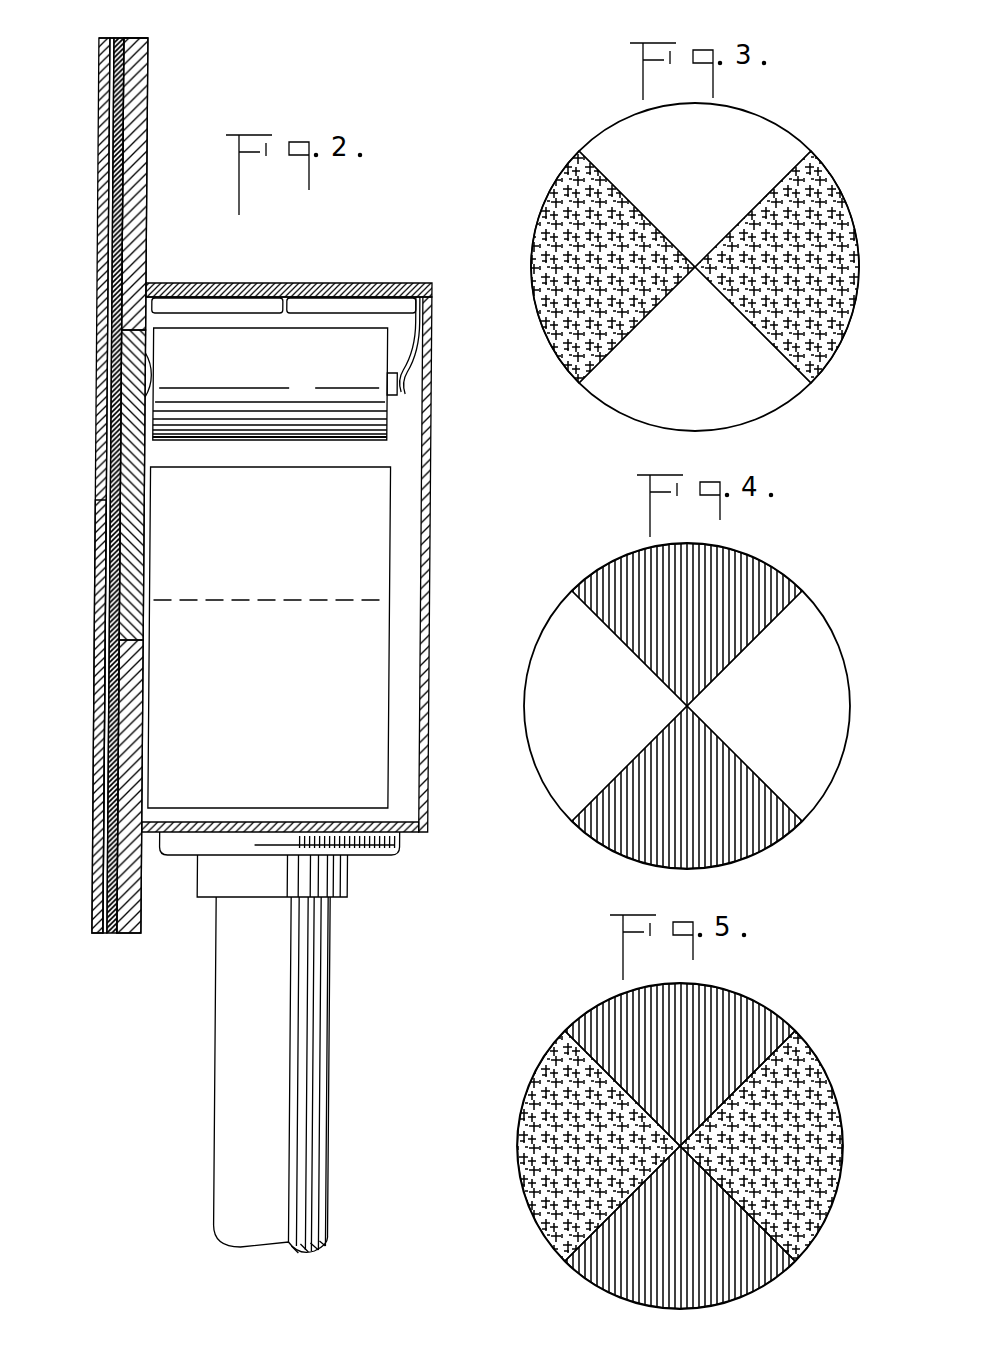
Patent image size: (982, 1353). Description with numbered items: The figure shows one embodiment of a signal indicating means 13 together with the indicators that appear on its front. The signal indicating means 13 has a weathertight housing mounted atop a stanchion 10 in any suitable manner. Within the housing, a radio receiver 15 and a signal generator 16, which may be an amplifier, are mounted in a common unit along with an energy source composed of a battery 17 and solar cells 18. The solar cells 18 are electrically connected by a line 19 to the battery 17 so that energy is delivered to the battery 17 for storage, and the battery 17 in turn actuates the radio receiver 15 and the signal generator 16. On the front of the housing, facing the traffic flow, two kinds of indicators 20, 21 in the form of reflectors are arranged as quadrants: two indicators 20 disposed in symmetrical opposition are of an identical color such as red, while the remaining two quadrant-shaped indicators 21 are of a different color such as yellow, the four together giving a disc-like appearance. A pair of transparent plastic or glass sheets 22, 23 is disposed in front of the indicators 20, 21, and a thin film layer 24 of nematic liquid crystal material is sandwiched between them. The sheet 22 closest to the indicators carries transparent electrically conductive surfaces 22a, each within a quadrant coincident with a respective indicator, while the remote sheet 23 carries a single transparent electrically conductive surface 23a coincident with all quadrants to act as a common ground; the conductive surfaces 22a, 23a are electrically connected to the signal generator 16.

In FIG. 2, the stanchion 10 is at (232, 1043).
In FIG. 2, the signal indicating means 13 is at (384, 270).
In FIG. 3, the signal indicating means 13 is at (851, 176).
In FIG. 4, the signal indicating means 13 is at (521, 633).
In FIG. 5, the signal indicating means 13 is at (502, 1166).
In FIG. 2, the radio receiver 15 is at (376, 667).
In FIG. 2, the signal generator 16 is at (389, 565).
In FIG. 2, the battery 17 is at (375, 447).
In FIG. 2, the solar cells 18 is at (299, 299).
In FIG. 2, the line 19 is at (432, 343).
In FIG. 2, the indicator 20 is at (137, 155).
In FIG. 4, the indicator 20 is at (760, 575).
In FIG. 5, the indicator 20 is at (760, 1016).
In FIG. 2, the indicator 21 is at (140, 350).
In FIG. 3, the indicator 21 is at (566, 371).
In FIG. 5, the indicator 21 is at (540, 1075).
In FIG. 2, the sheet 22 is at (111, 40).
In FIG. 2, the transparent electrically conductive surface 22a is at (122, 93).
In FIG. 2, the sheet 23 is at (103, 125).
In FIG. 2, the transparent electrically conductive surface 23a is at (110, 78).
In FIG. 2, the thin film layer 24 is at (103, 221).